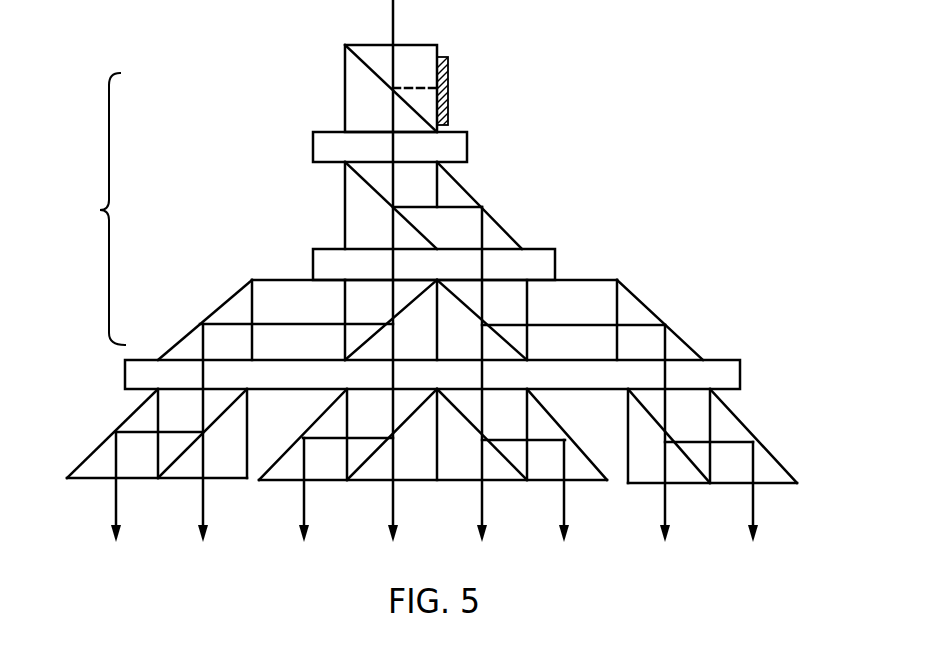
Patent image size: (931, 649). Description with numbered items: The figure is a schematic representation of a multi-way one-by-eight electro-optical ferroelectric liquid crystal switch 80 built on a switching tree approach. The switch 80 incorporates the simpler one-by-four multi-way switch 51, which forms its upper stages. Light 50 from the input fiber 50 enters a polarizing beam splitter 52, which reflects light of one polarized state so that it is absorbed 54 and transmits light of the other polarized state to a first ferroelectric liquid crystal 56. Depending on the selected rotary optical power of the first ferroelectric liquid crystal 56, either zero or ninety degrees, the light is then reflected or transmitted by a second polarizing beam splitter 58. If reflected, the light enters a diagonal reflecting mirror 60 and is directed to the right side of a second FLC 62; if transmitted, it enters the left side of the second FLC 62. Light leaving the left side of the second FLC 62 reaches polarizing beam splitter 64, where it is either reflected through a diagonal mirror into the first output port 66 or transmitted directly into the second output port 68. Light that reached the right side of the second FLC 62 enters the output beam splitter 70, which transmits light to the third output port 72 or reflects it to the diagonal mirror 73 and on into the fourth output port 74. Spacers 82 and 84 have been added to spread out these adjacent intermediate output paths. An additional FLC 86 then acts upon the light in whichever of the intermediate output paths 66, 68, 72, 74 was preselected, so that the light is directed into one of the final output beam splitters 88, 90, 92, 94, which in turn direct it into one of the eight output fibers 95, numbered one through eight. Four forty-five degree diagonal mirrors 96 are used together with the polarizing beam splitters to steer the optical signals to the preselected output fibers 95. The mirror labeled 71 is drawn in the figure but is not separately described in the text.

The input fiber 50 is at (393, 28).
The 1×4 multi-way switch 51 is at (97, 209).
The polarizing beam splitter 52 is at (345, 88).
The absorbed light 54 is at (448, 82).
The first ferroelectric liquid crystal 56 is at (313, 148).
The second polarizing beam splitter 58 is at (345, 210).
The diagonal reflecting mirror 60 is at (497, 233).
The second FLC 62 is at (313, 265).
The polarizing beam splitter 64 is at (377, 313).
The first output port 66 is at (185, 343).
The second output port 68 is at (407, 340).
The output beam splitter 70 is at (517, 313).
The mirror 71 is at (225, 305).
The third output port 72 is at (487, 345).
The diagonal mirror 73 is at (637, 312).
The fourth output port 74 is at (681, 353).
The 1×8 multi-way electro-optical FLC switch 80 is at (585, 222).
The spacer 82 is at (580, 313).
The spacer 84 is at (307, 313).
The additional FLC 86 is at (741, 370).
The final output beam splitter 88 is at (222, 410).
The final output beam splitter 90 is at (410, 410).
The final output beam splitter 92 is at (517, 426).
The final output beam splitter 94 is at (697, 428).
The output fibers 95 is at (113, 512).
The 45° diagonal mirrors 96 is at (100, 455).